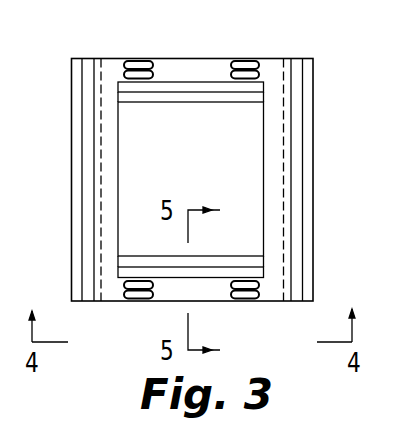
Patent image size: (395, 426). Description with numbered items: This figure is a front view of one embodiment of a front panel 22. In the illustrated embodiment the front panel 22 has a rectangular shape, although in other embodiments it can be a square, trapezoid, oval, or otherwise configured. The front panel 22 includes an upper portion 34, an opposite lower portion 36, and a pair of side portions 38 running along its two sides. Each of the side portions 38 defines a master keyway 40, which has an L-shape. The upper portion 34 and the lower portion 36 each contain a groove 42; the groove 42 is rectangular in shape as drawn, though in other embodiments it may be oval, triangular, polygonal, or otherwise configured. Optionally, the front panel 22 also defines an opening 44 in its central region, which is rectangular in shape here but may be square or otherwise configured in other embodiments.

The front panel 22 is at (310, 138).
The upper portion 34 is at (192, 68).
The lower portion 36 is at (177, 290).
The side portions 38 is at (110, 188).
The master keyway 40 is at (86, 289).
The groove 42 is at (264, 89).
The opening 44 is at (243, 135).